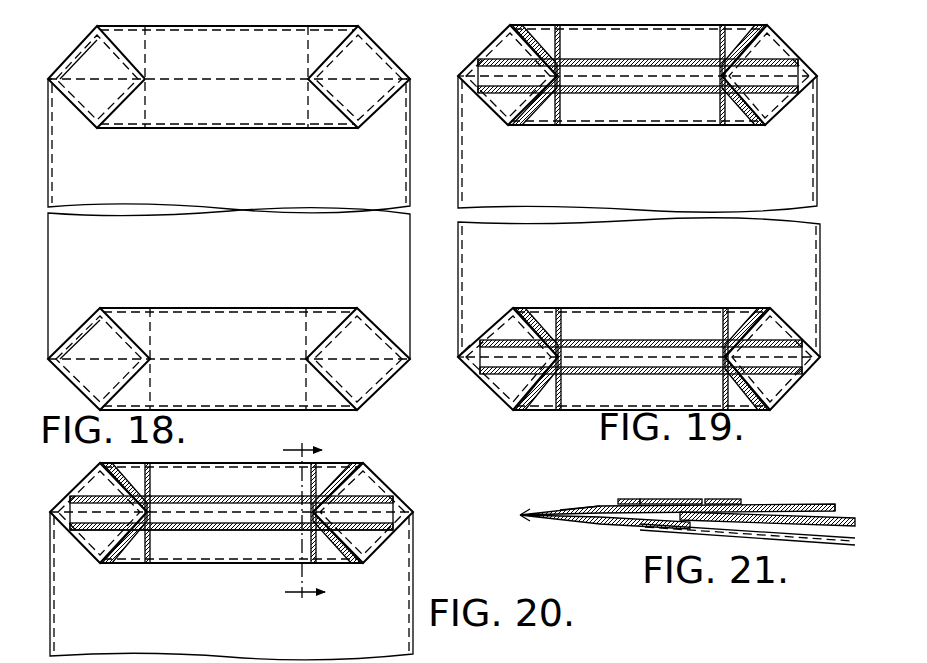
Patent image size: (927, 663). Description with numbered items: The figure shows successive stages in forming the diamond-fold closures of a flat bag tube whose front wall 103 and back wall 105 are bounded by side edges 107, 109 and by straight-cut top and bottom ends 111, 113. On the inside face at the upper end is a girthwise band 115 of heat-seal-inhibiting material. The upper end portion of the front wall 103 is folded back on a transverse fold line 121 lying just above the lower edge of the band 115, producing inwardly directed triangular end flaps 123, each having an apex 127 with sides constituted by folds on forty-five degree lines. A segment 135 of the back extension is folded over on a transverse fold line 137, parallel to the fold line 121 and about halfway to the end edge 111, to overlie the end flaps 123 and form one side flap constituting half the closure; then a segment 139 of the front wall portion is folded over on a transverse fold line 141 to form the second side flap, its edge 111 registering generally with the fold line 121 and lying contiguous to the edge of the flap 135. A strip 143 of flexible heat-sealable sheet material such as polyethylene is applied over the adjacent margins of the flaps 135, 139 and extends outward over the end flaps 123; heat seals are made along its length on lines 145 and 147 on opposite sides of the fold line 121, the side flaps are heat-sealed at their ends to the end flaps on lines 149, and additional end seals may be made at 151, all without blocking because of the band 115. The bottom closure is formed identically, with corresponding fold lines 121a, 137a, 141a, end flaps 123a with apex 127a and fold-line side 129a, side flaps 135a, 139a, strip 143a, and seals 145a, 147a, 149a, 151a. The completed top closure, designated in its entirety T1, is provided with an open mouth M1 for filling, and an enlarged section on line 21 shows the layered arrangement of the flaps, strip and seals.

In FIG. 18, the front wall 103 is at (236, 188).
In FIG. 19, the front wall 103 is at (654, 193).
In FIG. 20, the front wall 103 is at (231, 586).
In FIG. 21, the front wall 103 is at (749, 543).
In FIG. 21, the back wall 105 is at (748, 544).
In FIG. 18, the side edge 107 is at (47, 162).
In FIG. 19, the side edge 107 is at (459, 236).
In FIG. 18, the side edge 109 is at (410, 170).
In FIG. 19, the side edge 109 is at (818, 226).
In FIG. 18, the top end 111 is at (193, 77).
In FIG. 18, the bottom end 113 is at (190, 358).
In FIG. 21, the band of heat-seal-inhibiting material 115 is at (620, 526).
In FIG. 18, the fold line 121 is at (90, 80).
In FIG. 18, the fold line 121a is at (98, 362).
In FIG. 18, the triangular end flap 123 is at (89, 49).
In FIG. 19, the triangular end flap 123 is at (511, 40).
In FIG. 20, the triangular end flap 123 is at (95, 490).
In FIG. 18, the triangular end flap 123a is at (85, 377).
In FIG. 19, the triangular end flap 123a is at (505, 320).
In FIG. 18, the apex 127 is at (48, 77).
In FIG. 19, the apex 127 is at (458, 75).
In FIG. 19, the apex 127a is at (458, 360).
In FIG. 19, the side of end flap 129a is at (493, 398).
In FIG. 18, the segment 135 is at (214, 44).
In FIG. 19, the segment 135 is at (642, 36).
In FIG. 20, the segment 135 is at (250, 490).
In FIG. 21, the segment 135 is at (551, 506).
In FIG. 18, the segment 135a is at (181, 319).
In FIG. 19, the segment 135a is at (590, 325).
In FIG. 18, the transverse fold line 137 is at (290, 27).
In FIG. 19, the transverse fold line 137 is at (668, 26).
In FIG. 20, the transverse fold line 137 is at (231, 478).
In FIG. 21, the transverse fold line 137 is at (520, 515).
In FIG. 18, the transverse fold line 137a is at (275, 308).
In FIG. 19, the transverse fold line 137a is at (676, 308).
In FIG. 18, the segment 139 is at (187, 117).
In FIG. 19, the segment 139 is at (627, 122).
In FIG. 20, the segment 139 is at (245, 556).
In FIG. 21, the segment 139 is at (770, 503).
In FIG. 18, the segment 139a is at (196, 403).
In FIG. 19, the segment 139a is at (547, 411).
In FIG. 18, the transverse fold line 141 is at (266, 126).
In FIG. 18, the transverse fold line 141a is at (276, 412).
In FIG. 19, the transverse fold line 141a is at (585, 410).
In FIG. 19, the strip 143 is at (790, 72).
In FIG. 20, the strip 143 is at (395, 505).
In FIG. 21, the strip 143 is at (672, 499).
In FIG. 19, the strip 143a is at (800, 362).
In FIG. 19, the heat seal line 145 is at (617, 60).
In FIG. 20, the heat seal line 145 is at (212, 498).
In FIG. 21, the heat seal line 145 is at (628, 499).
In FIG. 19, the heat seal line 145a is at (648, 342).
In FIG. 19, the heat seal line 147 is at (618, 93).
In FIG. 20, the heat seal line 147 is at (180, 531).
In FIG. 21, the heat seal line 147 is at (716, 499).
In FIG. 19, the heat seal line 147a is at (615, 374).
In FIG. 19, the end seal line 149 is at (562, 95).
In FIG. 20, the end seal line 149 is at (120, 563).
In FIG. 19, the end seal line 149a is at (556, 318).
In FIG. 19, the additional end seal 151 is at (532, 38).
In FIG. 20, the additional end seal 151 is at (143, 472).
In FIG. 19, the additional end seal 151a is at (530, 398).
In FIG. 20, the section line 21 is at (304, 524).
In FIG. 20, the open mouth M1 is at (168, 565).
In FIG. 21, the open mouth M1 is at (843, 504).
In FIG. 20, the top closure T1 is at (272, 545).
In FIG. 21, the top closure T1 is at (592, 503).